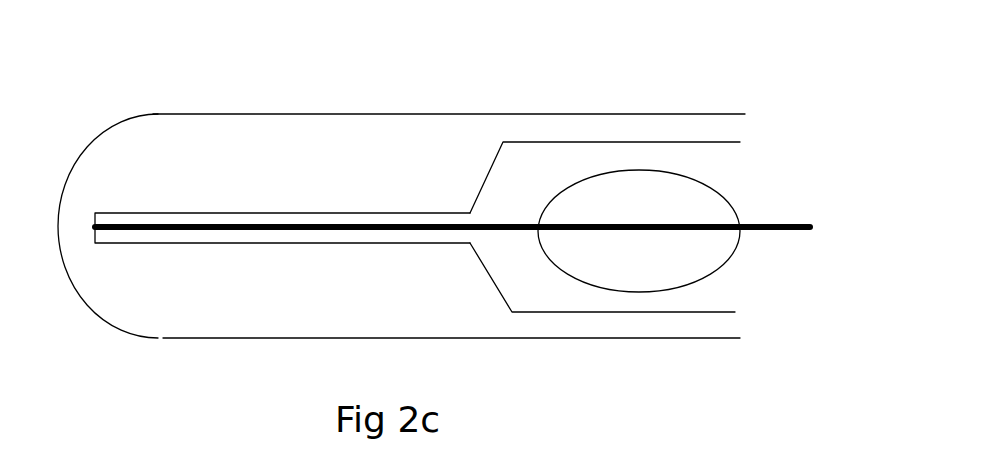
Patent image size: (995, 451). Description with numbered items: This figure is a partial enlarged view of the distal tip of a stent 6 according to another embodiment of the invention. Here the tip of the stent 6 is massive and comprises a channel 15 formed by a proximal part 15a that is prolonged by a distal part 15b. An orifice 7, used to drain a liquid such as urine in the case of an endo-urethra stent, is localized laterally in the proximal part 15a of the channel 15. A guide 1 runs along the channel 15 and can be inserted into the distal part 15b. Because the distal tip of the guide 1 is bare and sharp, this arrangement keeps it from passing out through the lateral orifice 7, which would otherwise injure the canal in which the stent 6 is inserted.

The guide 1 is at (370, 228).
The stent 6 is at (298, 83).
The orifice 7 is at (607, 188).
The channel 15 is at (439, 229).
The proximal part 15a is at (663, 141).
The distal part 15b is at (225, 212).